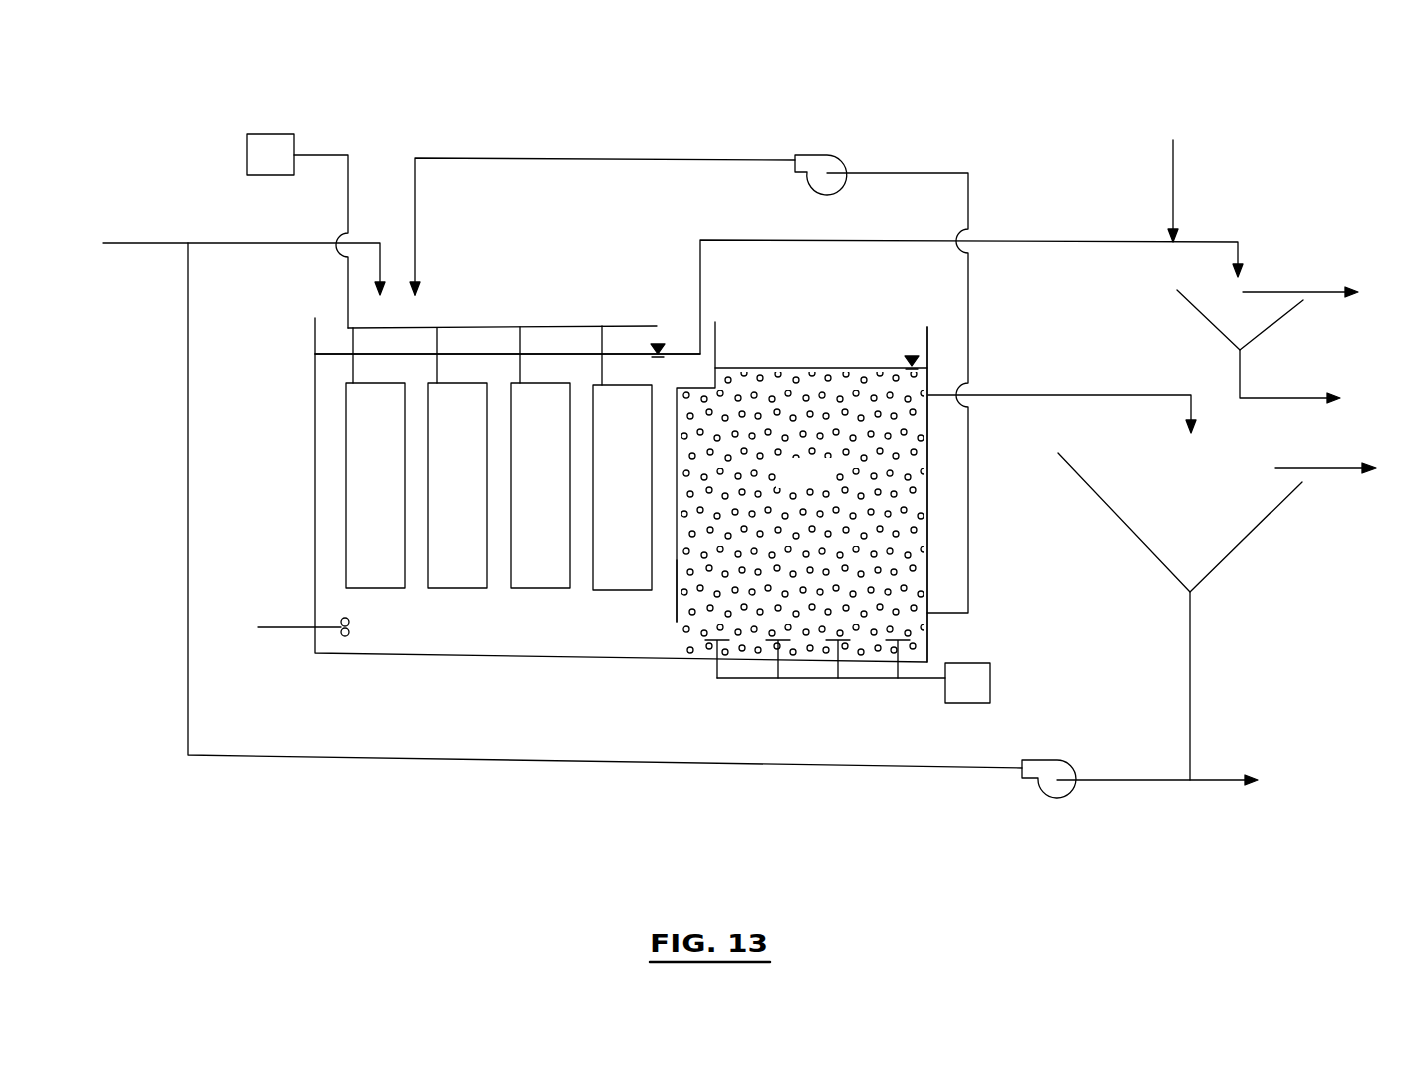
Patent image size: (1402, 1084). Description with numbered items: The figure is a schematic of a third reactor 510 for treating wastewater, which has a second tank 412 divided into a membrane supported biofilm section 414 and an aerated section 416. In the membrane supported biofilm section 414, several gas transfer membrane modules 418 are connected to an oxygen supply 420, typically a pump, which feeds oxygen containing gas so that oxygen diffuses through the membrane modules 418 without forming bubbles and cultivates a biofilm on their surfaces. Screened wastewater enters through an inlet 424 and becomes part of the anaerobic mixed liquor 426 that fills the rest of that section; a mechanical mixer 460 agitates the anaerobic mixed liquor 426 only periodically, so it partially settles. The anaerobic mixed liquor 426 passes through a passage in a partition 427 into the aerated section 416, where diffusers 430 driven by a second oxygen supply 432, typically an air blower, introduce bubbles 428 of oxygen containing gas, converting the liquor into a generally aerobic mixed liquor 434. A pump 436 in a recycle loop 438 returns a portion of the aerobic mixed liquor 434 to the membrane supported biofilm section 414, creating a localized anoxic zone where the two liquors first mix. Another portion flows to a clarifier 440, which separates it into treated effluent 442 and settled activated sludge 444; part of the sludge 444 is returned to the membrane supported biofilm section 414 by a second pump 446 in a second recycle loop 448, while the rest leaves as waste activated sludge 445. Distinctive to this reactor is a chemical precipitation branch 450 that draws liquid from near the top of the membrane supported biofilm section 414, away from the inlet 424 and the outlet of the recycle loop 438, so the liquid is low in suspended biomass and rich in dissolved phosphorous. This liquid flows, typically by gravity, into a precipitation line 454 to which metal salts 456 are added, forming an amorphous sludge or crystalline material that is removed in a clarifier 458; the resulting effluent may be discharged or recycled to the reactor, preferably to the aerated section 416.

The second tank 412 is at (387, 653).
The membrane supported biofilm (MSB) section 414 is at (562, 633).
The aerated section 416 is at (703, 620).
The gas transfer membrane modules 418 is at (523, 573).
The oxygen supply 420 is at (267, 142).
The inlet 424 is at (363, 245).
The anaerobic mixed liquor 426 is at (437, 634).
The partition 427 is at (673, 600).
The bubbles 428 is at (917, 567).
The diffusers 430 is at (770, 637).
The second oxygen supply 432 is at (960, 703).
The aerobic mixed liquor 434 is at (829, 486).
The pump 436 is at (817, 155).
The recycle loop 438 is at (968, 195).
The clarifier 440 is at (1253, 532).
The treated effluent 442 is at (1325, 468).
The settled activated sludge 444 is at (1190, 660).
The waste activated sludge 445 is at (1220, 780).
The second pump 446 is at (1057, 798).
The second recycle loop 448 is at (563, 761).
The chemical precipitation branch 450 is at (1083, 168).
The precipitation line 454 is at (1203, 240).
The metal salts 456 is at (1172, 177).
The clarifier 458 is at (1265, 330).
The mechanical mixer 460 is at (283, 627).
The third reactor 510 is at (213, 803).